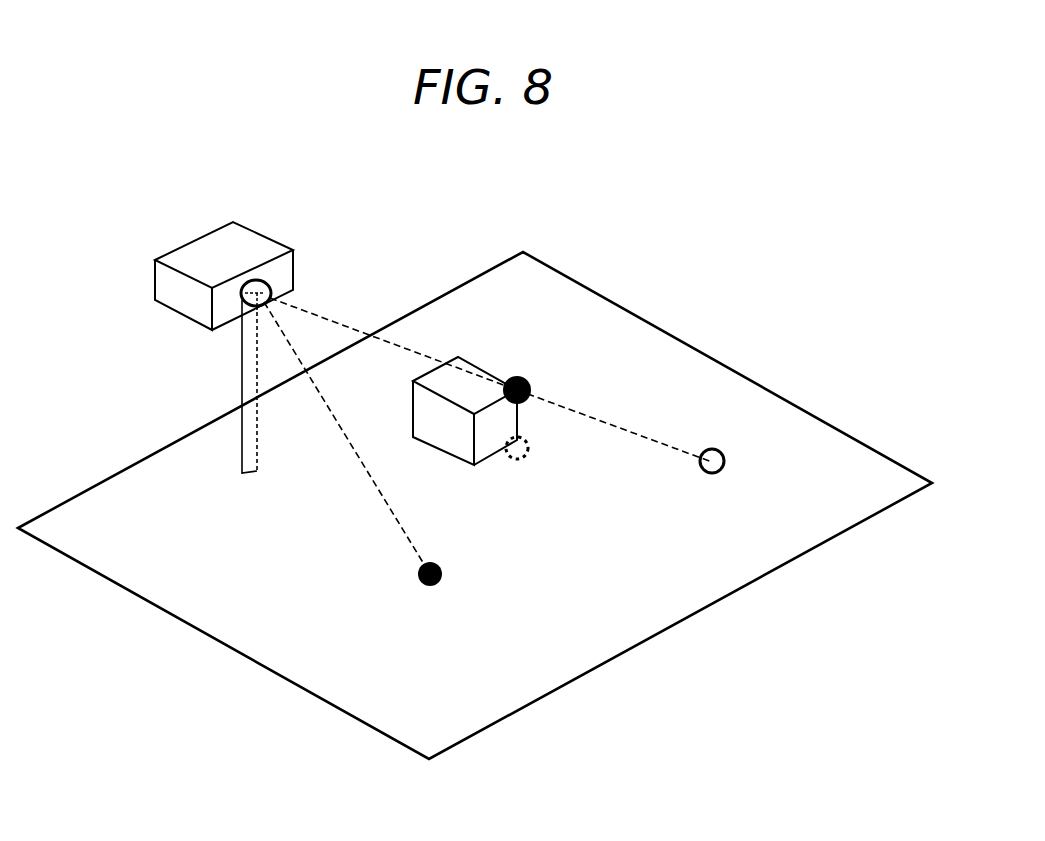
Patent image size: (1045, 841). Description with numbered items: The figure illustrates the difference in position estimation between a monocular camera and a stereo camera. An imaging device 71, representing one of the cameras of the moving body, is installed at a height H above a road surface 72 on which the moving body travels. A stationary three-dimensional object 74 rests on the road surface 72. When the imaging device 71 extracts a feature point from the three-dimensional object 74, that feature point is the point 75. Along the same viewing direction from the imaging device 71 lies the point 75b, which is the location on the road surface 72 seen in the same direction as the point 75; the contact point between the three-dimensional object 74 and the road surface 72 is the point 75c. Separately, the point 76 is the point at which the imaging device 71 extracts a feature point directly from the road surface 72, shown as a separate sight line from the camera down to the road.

The imaging device 71 is at (235, 242).
The road surface 72 is at (516, 280).
The three-dimensional object 74 is at (450, 443).
The point 75 is at (510, 378).
The point 75b is at (713, 448).
The point 75c is at (525, 460).
The point 76 is at (444, 577).
The height H is at (243, 381).